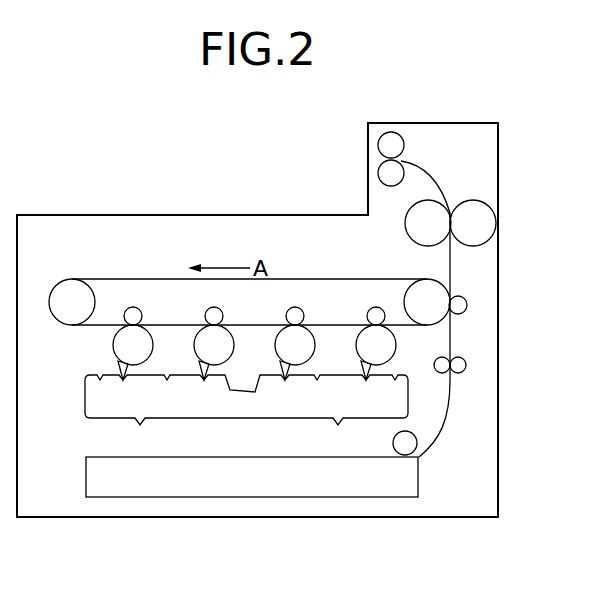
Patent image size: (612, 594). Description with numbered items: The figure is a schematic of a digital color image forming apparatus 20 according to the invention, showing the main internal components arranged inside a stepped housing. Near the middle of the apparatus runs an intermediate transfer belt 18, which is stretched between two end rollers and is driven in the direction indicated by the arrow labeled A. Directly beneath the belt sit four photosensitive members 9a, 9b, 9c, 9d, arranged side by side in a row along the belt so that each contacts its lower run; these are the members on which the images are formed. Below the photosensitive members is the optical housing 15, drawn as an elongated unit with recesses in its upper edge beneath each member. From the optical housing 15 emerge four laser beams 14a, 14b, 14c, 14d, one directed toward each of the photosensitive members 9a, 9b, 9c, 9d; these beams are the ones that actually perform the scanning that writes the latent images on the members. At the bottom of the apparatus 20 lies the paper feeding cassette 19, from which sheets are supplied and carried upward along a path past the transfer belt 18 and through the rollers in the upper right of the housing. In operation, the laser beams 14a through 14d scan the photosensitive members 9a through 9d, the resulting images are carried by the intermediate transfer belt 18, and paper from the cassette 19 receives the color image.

The digital color image forming apparatus 20 is at (275, 212).
The intermediate transfer belt 18 is at (122, 279).
The photosensitive member 9a is at (152, 333).
The photosensitive member 9b is at (233, 333).
The photosensitive member 9c is at (314, 333).
The photosensitive member 9d is at (395, 333).
The optical housing 15 is at (84, 391).
The laser beam 14a is at (121, 384).
The laser beam 14b is at (202, 384).
The laser beam 14c is at (283, 384).
The laser beam 14d is at (364, 384).
The paper feeding cassette 19 is at (235, 498).